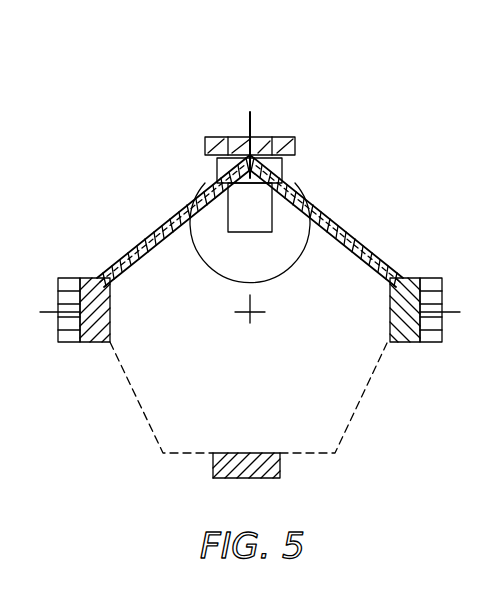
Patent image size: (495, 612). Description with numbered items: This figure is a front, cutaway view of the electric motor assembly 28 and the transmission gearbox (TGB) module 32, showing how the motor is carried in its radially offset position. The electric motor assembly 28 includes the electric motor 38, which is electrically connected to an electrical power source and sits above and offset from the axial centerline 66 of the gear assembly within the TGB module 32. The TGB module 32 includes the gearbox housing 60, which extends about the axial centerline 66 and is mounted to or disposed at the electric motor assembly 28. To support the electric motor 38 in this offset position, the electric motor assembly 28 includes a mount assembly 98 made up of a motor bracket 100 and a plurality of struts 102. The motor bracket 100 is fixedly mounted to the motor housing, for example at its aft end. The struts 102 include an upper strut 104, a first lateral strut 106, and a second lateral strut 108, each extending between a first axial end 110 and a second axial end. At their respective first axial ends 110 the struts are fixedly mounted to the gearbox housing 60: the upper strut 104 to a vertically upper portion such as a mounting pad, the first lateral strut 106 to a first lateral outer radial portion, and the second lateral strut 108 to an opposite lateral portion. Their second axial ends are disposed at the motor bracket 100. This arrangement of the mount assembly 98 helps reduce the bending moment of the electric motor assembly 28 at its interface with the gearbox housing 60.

The electric motor assembly 28 is at (366, 221).
The transmission gearbox (TGB) module 32 is at (388, 423).
The electric motor 38 is at (287, 213).
The gearbox housing 60 is at (148, 418).
The axial centerline 66 is at (245, 312).
The mount assembly 98 is at (320, 130).
The motor bracket 100 is at (228, 208).
The struts 102 is at (145, 197).
The upper strut 104 is at (218, 137).
The first lateral strut 106 is at (385, 263).
The second lateral strut 108 is at (128, 252).
The first axial end 110 is at (113, 337).